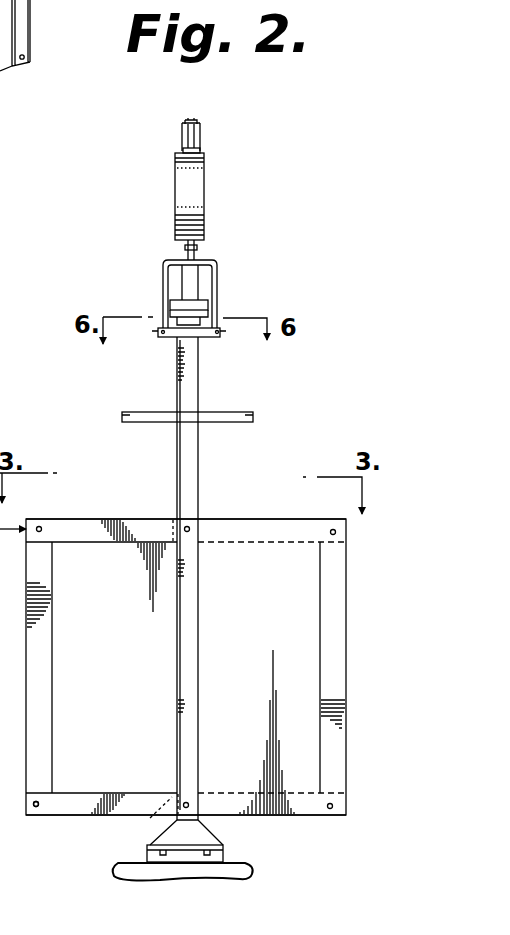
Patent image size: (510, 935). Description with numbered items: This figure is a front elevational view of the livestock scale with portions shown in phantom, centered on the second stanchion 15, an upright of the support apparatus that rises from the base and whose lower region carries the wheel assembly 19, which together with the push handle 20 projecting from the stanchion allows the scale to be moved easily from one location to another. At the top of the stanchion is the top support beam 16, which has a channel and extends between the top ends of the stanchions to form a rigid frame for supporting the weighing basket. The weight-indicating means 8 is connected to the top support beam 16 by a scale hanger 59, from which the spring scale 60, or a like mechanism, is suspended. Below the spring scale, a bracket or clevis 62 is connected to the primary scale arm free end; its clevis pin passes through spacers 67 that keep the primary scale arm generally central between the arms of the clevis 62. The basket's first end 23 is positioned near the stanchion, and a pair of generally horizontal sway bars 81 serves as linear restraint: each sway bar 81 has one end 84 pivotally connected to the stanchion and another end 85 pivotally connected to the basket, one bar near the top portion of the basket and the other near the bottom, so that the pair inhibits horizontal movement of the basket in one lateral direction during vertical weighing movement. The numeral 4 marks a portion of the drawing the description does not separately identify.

The frame member of adjacent figure 4 is at (15, 82).
The weight-indicating means 8 is at (174, 178).
The scale hanger 59 is at (200, 147).
The spring scale 60 is at (205, 197).
The clevis 62 is at (217, 263).
The top support beam 16 is at (209, 298).
The spacers 67 is at (164, 338).
The push handle 20 is at (238, 412).
The second stanchion 15 is at (190, 690).
The first end 23 is at (60, 673).
The sway bars 81 is at (100, 543).
The one end 84 is at (198, 800).
The another end 85 is at (45, 815).
The wheel assembly 19 is at (117, 867).